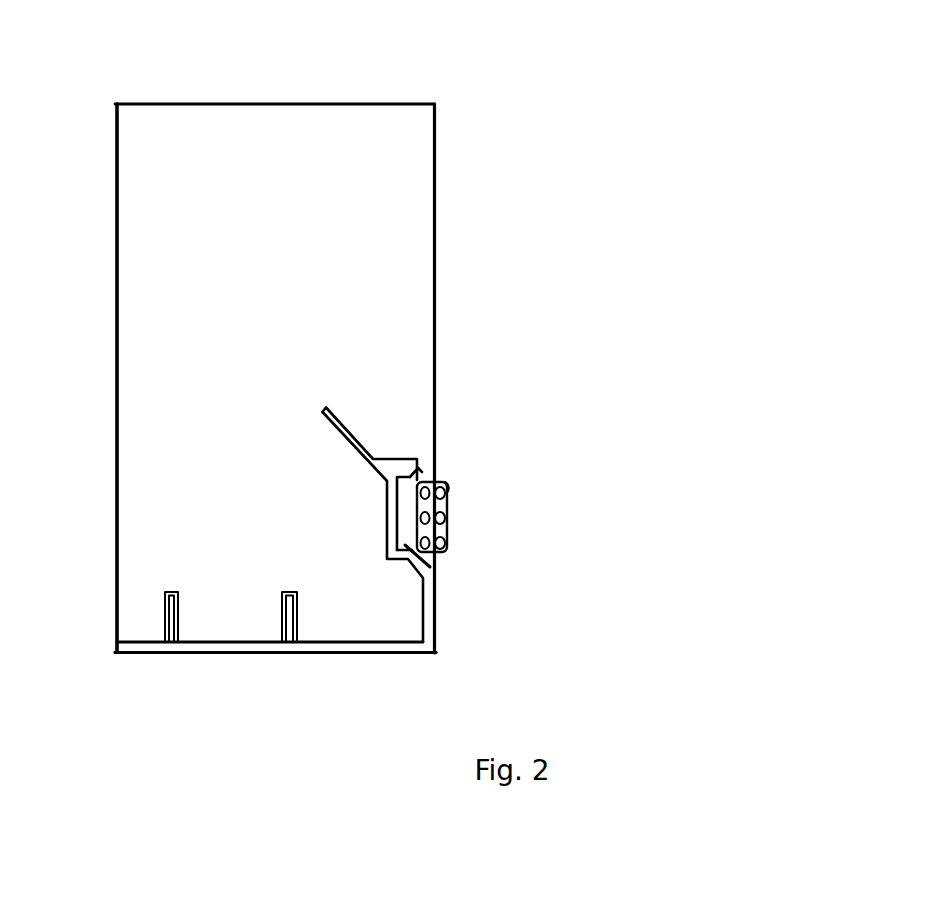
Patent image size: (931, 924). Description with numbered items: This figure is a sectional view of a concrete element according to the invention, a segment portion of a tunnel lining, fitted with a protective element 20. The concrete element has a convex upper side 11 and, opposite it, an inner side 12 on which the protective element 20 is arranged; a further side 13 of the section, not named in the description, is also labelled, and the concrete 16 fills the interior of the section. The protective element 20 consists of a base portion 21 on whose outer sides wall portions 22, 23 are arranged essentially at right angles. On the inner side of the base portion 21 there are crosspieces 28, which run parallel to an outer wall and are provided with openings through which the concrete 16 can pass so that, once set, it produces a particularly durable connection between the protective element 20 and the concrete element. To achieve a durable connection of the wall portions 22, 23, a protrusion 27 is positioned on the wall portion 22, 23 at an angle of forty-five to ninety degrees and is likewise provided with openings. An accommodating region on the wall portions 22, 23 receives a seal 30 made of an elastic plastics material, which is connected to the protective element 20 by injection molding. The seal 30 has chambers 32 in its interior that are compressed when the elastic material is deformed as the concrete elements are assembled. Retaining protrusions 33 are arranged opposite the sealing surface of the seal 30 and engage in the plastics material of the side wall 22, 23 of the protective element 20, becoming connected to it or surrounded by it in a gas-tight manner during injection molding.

The upper side 11 is at (385, 103).
The inner side 12 is at (400, 640).
The side wall 13 is at (510, 378).
The concrete 16 is at (360, 293).
The protective element 20 is at (352, 706).
The base portion 21 is at (248, 647).
The wall portion 22 is at (484, 563).
The wall portion 23 is at (437, 613).
The protrusion 27 is at (353, 431).
The crosspiece 28 is at (173, 620).
The seal 30 is at (521, 500).
The chamber 32 is at (447, 487).
The retaining protrusion 33 is at (418, 470).